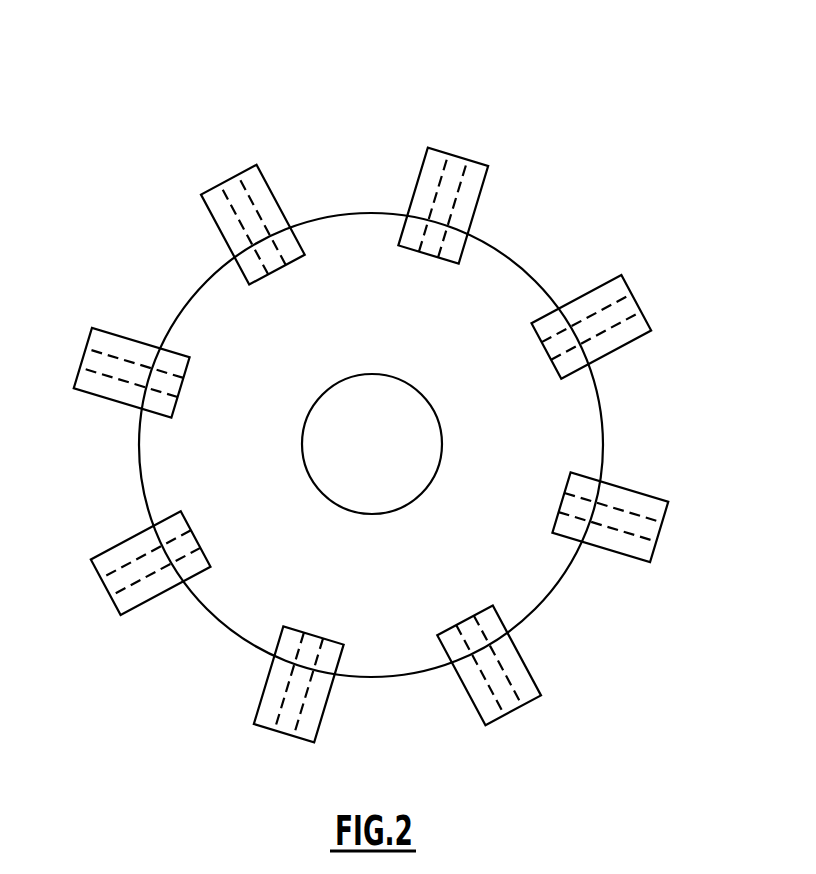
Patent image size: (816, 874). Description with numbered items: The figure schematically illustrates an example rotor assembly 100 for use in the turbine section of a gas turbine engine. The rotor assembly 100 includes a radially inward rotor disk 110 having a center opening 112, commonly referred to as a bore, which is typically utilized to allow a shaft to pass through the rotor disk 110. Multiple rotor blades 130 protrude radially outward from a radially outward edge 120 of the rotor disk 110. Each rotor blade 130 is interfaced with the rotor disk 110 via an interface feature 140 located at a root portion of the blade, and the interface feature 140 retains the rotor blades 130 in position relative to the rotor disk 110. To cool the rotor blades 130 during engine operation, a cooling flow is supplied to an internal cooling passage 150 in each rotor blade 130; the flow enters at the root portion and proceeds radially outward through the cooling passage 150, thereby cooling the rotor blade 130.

The rotor assembly 100 is at (146, 68).
The rotor disk 110 is at (507, 305).
The center opening 112 is at (397, 418).
The radially outward edge 120 is at (354, 445).
The rotor blade 130 is at (472, 173).
The interface feature 140 is at (572, 358).
The cooling passage 150 is at (253, 200).